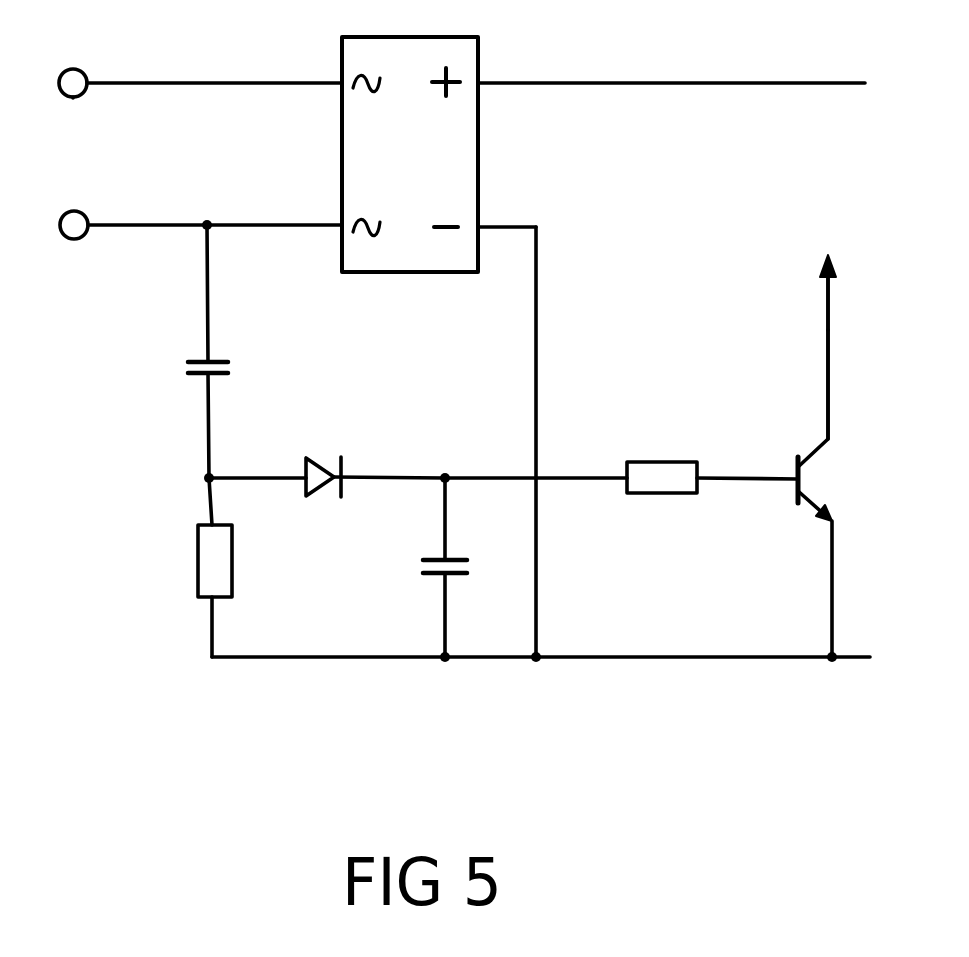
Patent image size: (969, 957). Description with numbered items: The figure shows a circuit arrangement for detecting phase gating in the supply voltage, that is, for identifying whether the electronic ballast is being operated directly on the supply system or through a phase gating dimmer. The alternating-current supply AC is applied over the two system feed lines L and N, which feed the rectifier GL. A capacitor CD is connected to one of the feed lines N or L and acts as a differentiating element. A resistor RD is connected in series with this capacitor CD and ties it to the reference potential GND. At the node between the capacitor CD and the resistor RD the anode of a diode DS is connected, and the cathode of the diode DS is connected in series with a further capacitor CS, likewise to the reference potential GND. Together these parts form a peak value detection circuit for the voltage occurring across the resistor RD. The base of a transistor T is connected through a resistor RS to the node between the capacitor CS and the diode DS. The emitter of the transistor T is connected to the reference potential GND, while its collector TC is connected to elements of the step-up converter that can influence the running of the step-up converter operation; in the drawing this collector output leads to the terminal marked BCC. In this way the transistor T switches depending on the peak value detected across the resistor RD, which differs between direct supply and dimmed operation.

The system feed line L is at (200, 54).
The system feed line N is at (201, 259).
The supply system AC is at (78, 139).
The rectifier GL is at (603, 349).
The capacitor CD is at (170, 354).
The resistor RD is at (177, 567).
The diode DS is at (327, 446).
The further capacitor CS is at (407, 567).
The resistor RS is at (621, 448).
The transistor T is at (840, 468).
The collector TC is at (792, 378).
The output to control circuit BCC is at (821, 261).
The reference potential GND is at (541, 693).